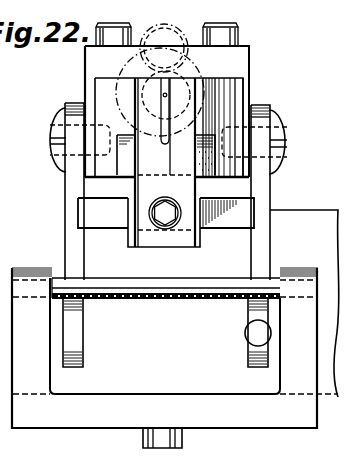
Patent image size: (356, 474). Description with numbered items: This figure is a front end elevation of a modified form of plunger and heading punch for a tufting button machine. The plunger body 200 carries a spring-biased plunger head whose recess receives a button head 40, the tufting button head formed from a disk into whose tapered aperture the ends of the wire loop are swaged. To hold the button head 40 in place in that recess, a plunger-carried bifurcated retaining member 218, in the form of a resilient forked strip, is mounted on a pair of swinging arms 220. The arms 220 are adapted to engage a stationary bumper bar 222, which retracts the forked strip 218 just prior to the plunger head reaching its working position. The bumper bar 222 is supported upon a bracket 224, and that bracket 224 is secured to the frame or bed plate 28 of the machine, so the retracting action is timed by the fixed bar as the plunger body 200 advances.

The plunger body 200 is at (250, 60).
The button head 40 is at (145, 82).
The bifurcated retaining member 218 is at (153, 87).
The swinging arms 220 is at (67, 188).
The bumper bar 222 is at (160, 289).
The bracket 224 is at (167, 396).
The frame or bed plate 28 is at (325, 210).